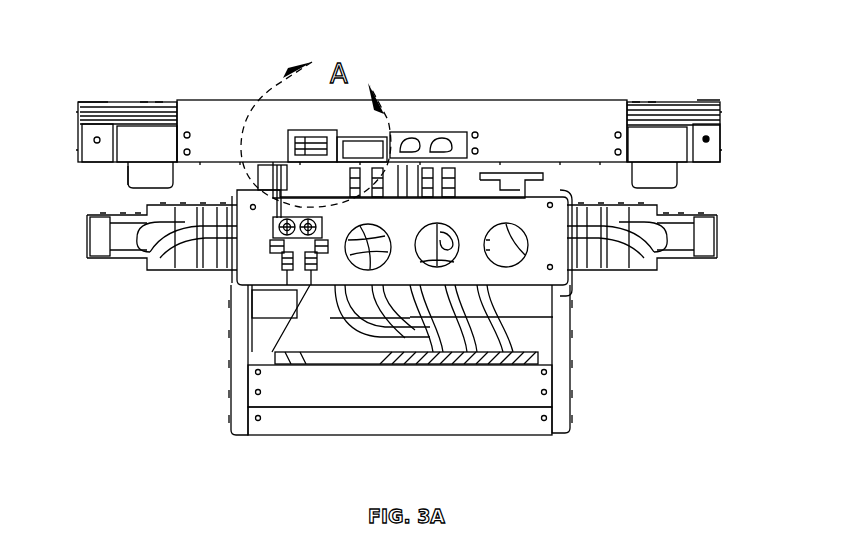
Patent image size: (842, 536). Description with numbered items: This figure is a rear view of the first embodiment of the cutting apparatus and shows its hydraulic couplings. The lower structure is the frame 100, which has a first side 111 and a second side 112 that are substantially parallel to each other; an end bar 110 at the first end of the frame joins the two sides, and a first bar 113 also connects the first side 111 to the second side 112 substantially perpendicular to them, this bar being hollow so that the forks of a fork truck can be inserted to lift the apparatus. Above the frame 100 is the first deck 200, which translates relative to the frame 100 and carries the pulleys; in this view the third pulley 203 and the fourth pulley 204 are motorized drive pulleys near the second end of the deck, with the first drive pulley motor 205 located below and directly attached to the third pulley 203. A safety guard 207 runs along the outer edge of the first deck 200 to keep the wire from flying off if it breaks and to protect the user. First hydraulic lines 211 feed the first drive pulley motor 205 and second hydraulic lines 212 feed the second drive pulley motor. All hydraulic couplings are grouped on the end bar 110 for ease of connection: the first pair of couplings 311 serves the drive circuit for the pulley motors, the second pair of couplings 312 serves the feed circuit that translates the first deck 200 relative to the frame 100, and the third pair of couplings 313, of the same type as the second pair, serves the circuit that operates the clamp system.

The frame 100 is at (219, 446).
The end bar 110 is at (543, 238).
The first side 111 is at (230, 373).
The second side 112 is at (570, 427).
The first bar 113 is at (502, 333).
The first deck 200 is at (569, 73).
The third pulley 203 is at (123, 105).
The fourth pulley 204 is at (672, 102).
The first drive pulley motor 205 is at (126, 182).
The safety guard 207 is at (78, 100).
The first hydraulic lines 211 is at (167, 245).
The second hydraulic lines 212 is at (662, 258).
The first pair of couplings 311 is at (303, 216).
The second pair of couplings 312 is at (283, 268).
The third pair of couplings 313 is at (328, 250).